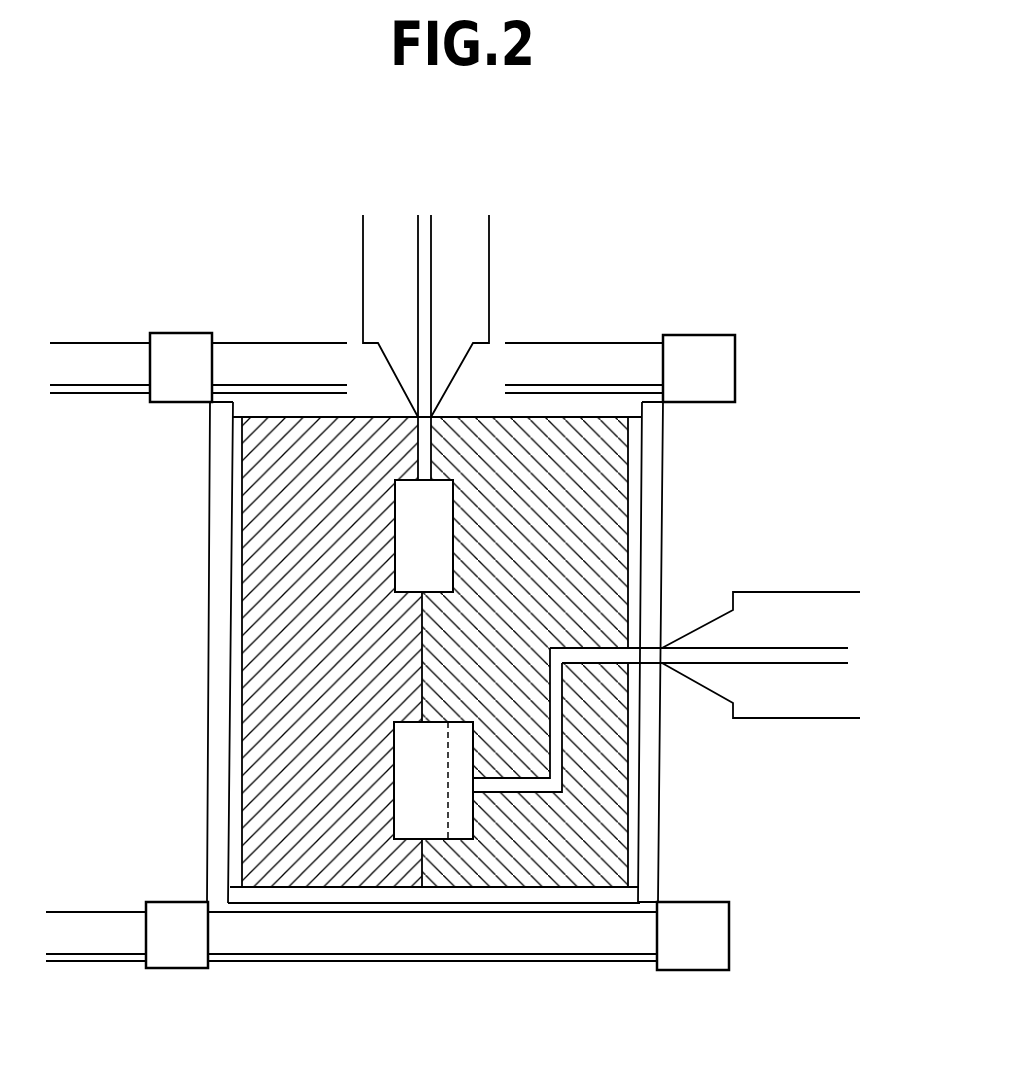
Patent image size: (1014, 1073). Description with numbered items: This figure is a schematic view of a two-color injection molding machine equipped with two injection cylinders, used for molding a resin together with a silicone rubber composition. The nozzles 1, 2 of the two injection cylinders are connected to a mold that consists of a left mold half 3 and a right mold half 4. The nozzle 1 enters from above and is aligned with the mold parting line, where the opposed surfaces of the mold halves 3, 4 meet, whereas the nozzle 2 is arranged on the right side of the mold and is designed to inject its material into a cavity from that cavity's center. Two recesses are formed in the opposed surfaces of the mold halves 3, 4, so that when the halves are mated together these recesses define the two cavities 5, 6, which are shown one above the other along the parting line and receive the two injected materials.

The nozzle 1 is at (427, 307).
The nozzle 2 is at (778, 655).
The left mold half 3 is at (295, 525).
The right mold half 4 is at (563, 855).
The cavity 5 is at (423, 535).
The cavity 6 is at (463, 816).